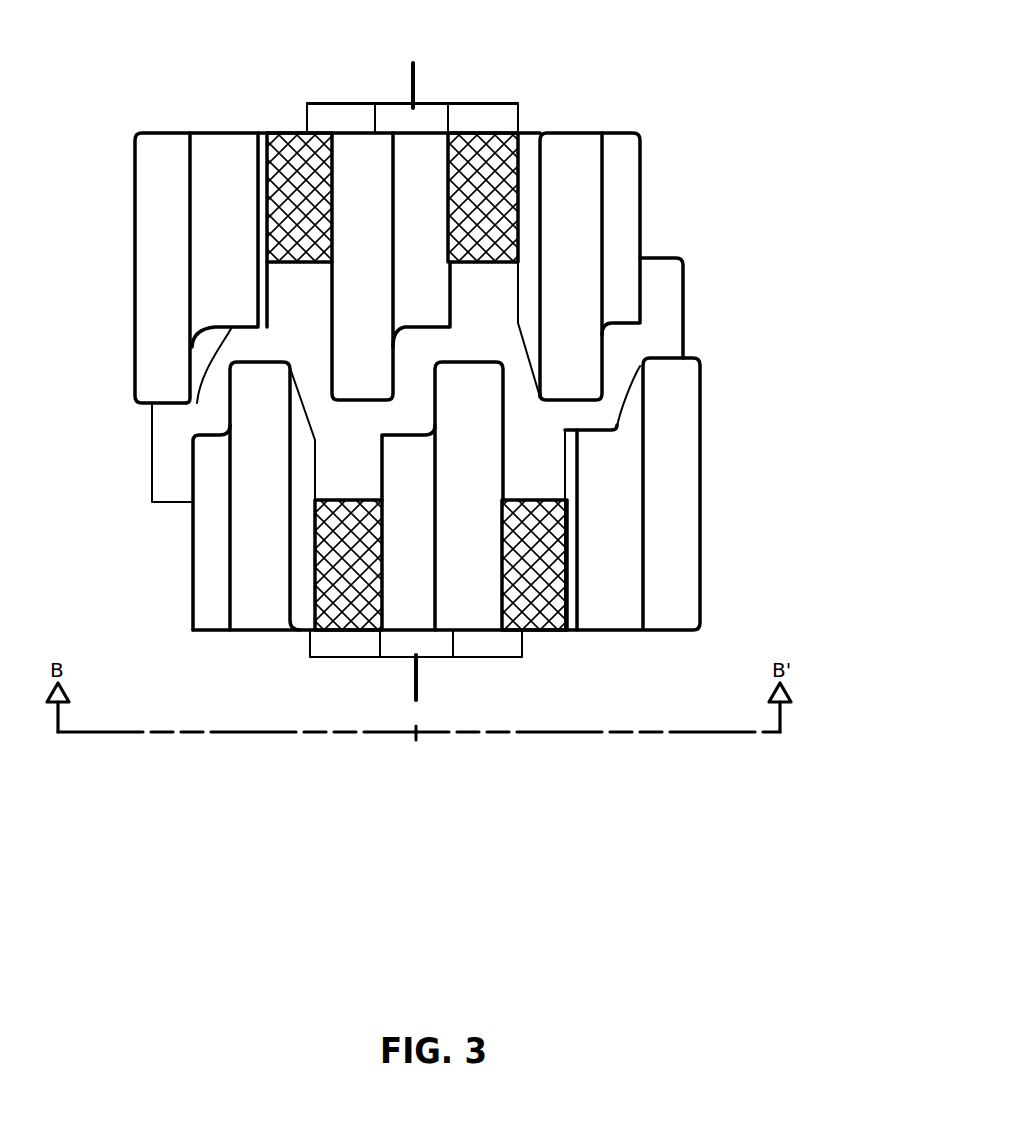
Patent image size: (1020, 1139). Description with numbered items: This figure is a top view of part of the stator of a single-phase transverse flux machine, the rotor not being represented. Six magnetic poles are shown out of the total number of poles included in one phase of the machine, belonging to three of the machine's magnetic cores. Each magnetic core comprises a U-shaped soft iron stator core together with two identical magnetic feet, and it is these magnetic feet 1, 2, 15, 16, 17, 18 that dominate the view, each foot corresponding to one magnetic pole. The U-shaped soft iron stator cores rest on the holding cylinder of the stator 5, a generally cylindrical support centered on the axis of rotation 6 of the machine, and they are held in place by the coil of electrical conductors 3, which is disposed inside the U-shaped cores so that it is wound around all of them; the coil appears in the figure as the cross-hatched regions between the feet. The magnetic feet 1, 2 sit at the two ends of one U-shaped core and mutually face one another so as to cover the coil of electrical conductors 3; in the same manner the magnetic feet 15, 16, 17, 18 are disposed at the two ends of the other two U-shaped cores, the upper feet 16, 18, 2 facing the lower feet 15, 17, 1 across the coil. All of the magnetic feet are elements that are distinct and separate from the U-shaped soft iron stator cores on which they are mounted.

The magnetic foot 1 is at (683, 440).
The magnetic foot 2 is at (577, 225).
The coil of electrical conductors 3 is at (663, 312).
The holding cylinder of the stator 5 is at (495, 113).
The axis of rotation 6 is at (413, 77).
The magnetic foot 15 is at (263, 573).
The magnetic foot 16 is at (217, 168).
The magnetic foot 17 is at (483, 575).
The magnetic foot 18 is at (363, 167).